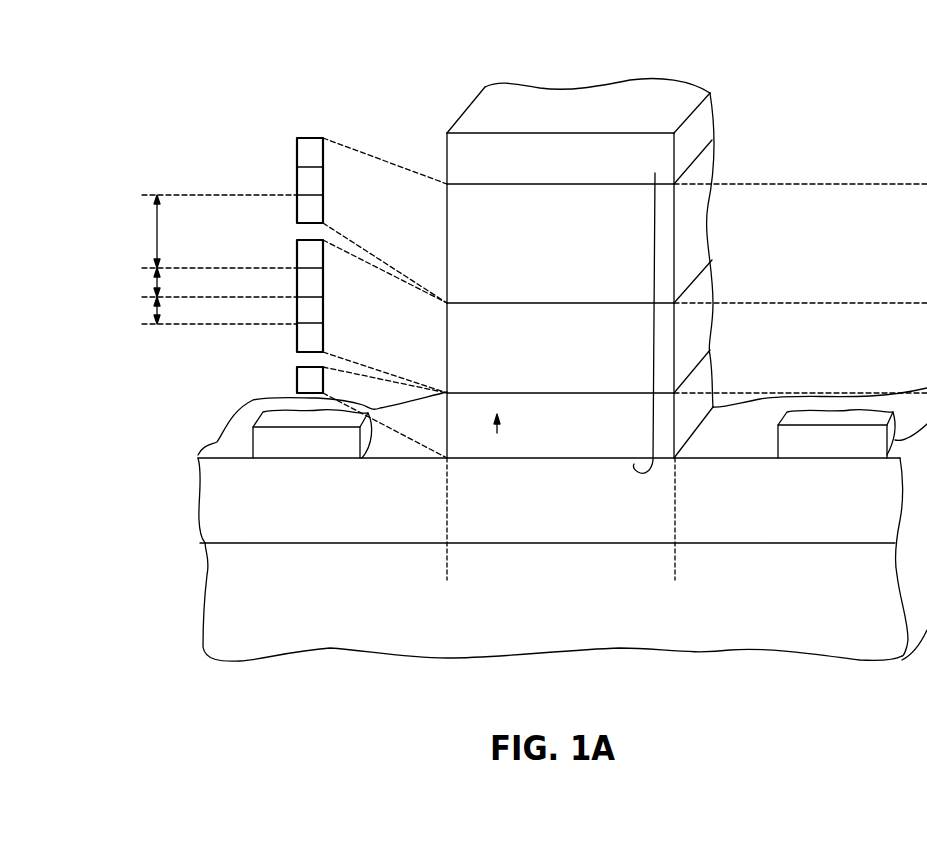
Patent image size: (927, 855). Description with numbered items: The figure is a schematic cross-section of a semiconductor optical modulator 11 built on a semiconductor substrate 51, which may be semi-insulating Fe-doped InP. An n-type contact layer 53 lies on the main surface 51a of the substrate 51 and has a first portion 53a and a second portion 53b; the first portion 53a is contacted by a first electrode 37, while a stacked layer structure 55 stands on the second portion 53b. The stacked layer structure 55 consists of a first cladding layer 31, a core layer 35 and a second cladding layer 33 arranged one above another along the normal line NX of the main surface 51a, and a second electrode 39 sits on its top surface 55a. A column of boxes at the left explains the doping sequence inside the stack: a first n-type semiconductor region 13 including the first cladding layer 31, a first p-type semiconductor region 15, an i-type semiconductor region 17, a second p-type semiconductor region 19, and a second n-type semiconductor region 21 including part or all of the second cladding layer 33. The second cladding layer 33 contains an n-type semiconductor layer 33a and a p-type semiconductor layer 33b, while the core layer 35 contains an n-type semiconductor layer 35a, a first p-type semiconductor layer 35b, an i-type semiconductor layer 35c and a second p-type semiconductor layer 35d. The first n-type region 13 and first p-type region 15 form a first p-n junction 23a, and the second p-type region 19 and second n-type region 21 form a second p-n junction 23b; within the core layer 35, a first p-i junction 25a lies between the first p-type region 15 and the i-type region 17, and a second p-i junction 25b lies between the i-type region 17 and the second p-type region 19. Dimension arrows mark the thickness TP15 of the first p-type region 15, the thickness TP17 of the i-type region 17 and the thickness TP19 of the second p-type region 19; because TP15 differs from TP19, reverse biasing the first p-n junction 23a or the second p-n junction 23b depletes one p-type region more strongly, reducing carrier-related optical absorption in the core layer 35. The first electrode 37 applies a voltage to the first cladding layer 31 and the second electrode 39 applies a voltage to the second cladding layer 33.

The semiconductor optical modulator 11 is at (780, 91).
The first n-type semiconductor region 13 is at (267, 328).
The first p-type semiconductor region 15 is at (297, 323).
The i-type semiconductor region 17 is at (297, 288).
The second p-type semiconductor region 19 is at (267, 197).
The second n-type semiconductor region 21 is at (267, 140).
The first p-n junction 23a is at (297, 327).
The second p-n junction 23b is at (297, 195).
The first p-i junction 25a is at (297, 297).
The second p-i junction 25b is at (297, 268).
The first cladding layer 31 is at (323, 380).
The second cladding layer 33 is at (383, 140).
The n-type semiconductor layer 33a is at (328, 140).
The p-type semiconductor layer 33b is at (328, 196).
The core layer 35 is at (385, 278).
The n-type semiconductor layer 35a is at (323, 338).
The first p-type semiconductor layer 35b is at (323, 310).
The i-type semiconductor layer 35c is at (323, 283).
The second p-type semiconductor layer 35d is at (323, 255).
The first electrode 37 is at (252, 440).
The second electrode 39 is at (460, 152).
The substrate 51 is at (217, 594).
The main surface 51a is at (227, 543).
The contact layer 53 is at (212, 512).
The first portion 53a is at (447, 564).
The second portion 53b is at (675, 564).
The stacked layer structure 55 is at (636, 177).
The top surface 55a is at (613, 183).
The thickness of the first p-type semiconductor region TP15 is at (157, 317).
The thickness of the i-type semiconductor region TP17 is at (157, 287).
The thickness of the second p-type semiconductor region TP19 is at (157, 234).
The normal line NX is at (497, 433).